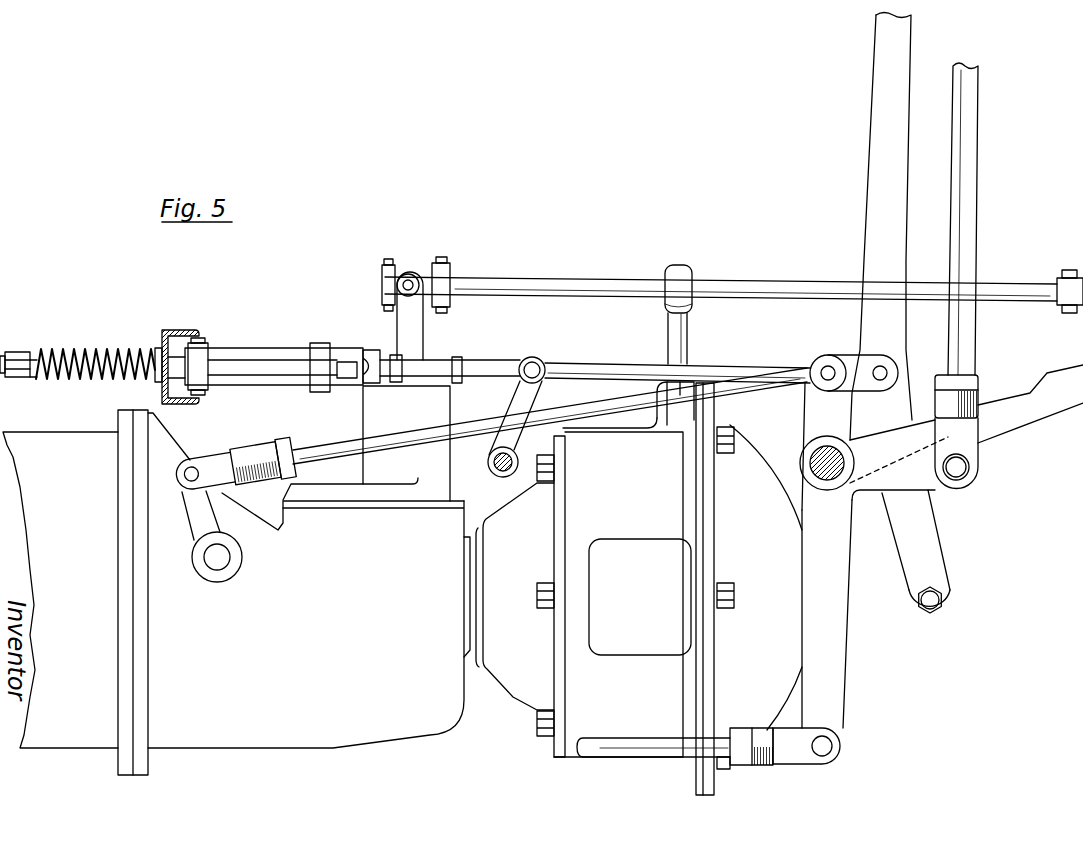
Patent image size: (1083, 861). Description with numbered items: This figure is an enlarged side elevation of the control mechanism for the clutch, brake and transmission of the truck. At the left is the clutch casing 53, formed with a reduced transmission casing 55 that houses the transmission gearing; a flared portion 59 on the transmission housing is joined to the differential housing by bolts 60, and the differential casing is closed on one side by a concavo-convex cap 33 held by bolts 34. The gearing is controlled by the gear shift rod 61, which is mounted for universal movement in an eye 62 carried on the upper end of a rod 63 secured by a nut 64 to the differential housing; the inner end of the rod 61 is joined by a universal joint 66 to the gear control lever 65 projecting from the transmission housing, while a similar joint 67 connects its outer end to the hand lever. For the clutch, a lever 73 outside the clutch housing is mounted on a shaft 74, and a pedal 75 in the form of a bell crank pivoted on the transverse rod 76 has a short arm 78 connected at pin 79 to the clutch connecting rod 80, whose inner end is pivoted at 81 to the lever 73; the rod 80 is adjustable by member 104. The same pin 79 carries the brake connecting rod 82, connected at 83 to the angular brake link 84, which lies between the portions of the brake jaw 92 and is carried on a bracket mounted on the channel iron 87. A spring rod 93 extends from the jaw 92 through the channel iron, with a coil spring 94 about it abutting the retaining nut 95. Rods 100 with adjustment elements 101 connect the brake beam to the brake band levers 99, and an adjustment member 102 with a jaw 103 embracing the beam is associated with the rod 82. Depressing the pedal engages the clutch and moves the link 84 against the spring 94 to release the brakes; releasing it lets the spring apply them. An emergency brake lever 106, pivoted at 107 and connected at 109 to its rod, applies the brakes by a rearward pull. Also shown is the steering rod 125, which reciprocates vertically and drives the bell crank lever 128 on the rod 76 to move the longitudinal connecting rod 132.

The concavo-convex cap 33 is at (749, 589).
The bolts 34 is at (734, 608).
The clutch casing 53 is at (60, 590).
The transmission casing 55 is at (309, 567).
The flared portion 59 is at (515, 596).
The bolts 60 is at (543, 609).
The gear shift rod 61 is at (543, 278).
The eye 62 is at (681, 283).
The rod 63 is at (682, 339).
The nut 64 is at (657, 386).
The gear control lever 65 is at (410, 330).
The universal joint 66 is at (411, 273).
The universal joint 67 is at (1070, 283).
The lever 73 is at (197, 509).
The shaft 74 is at (226, 556).
The pedal 75 is at (1040, 391).
The transverse rod 76 is at (812, 457).
The short arm 78 is at (821, 413).
The pin 79 is at (829, 366).
The clutch connecting rod 80 is at (420, 441).
The pivotal connection 81 is at (190, 468).
The brake connecting rod 82 is at (593, 362).
The connection 83 is at (209, 387).
The brake link 84 is at (214, 369).
The channel iron 87 is at (174, 333).
The brake jaw 92 is at (158, 379).
The spring rod 93 is at (85, 360).
The coil spring 94 is at (82, 374).
The retaining nut 95 is at (20, 376).
The brake band levers 99 is at (527, 394).
The rods 100 is at (430, 374).
The adjustment elements 101 is at (458, 379).
The adjustment member 102 is at (407, 358).
The jaw 103 is at (290, 377).
The adjustment member 104 is at (261, 455).
The emergency brake lever 106 is at (880, 198).
The pivot 107 is at (949, 600).
The pivotal connection 109 is at (886, 371).
The rod 125 is at (963, 207).
The bell crank lever 128 is at (827, 614).
The connecting rod 132 is at (617, 746).